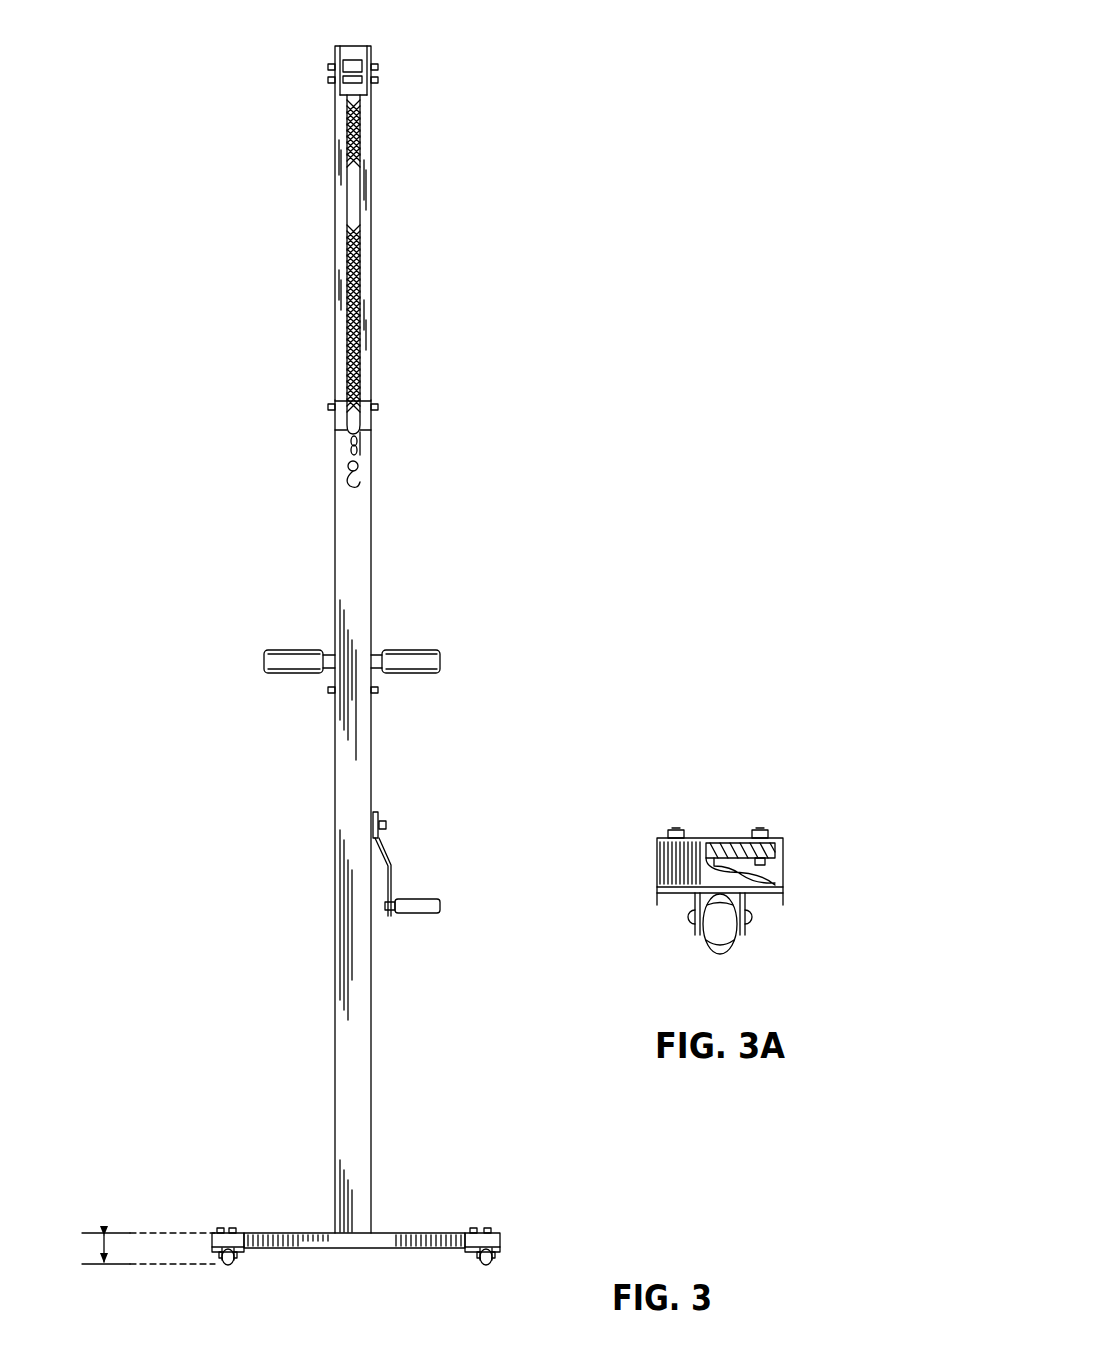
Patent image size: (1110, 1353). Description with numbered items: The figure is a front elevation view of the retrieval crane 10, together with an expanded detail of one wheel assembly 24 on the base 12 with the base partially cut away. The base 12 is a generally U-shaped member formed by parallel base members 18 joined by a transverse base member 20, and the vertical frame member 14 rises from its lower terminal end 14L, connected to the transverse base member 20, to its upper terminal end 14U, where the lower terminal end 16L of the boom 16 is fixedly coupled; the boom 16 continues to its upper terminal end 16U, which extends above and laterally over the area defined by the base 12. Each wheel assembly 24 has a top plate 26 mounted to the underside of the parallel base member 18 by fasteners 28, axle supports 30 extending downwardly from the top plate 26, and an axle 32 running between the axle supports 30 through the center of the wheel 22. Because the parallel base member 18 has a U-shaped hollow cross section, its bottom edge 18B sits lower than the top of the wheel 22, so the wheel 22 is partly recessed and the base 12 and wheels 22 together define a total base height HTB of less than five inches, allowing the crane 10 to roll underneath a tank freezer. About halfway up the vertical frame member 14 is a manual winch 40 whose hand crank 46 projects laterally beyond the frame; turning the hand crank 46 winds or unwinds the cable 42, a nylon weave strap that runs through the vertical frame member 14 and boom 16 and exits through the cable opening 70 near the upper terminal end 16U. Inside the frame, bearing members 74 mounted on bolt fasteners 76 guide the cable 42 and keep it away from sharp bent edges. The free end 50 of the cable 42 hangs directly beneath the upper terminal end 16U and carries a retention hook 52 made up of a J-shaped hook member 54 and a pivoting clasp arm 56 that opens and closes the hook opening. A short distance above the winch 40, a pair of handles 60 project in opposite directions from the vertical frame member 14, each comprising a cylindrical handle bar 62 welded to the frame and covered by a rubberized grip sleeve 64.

In FIG. 3, the retrieval crane 10 is at (541, 60).
In FIG. 3, the base 12 is at (385, 1239).
In FIG. 3, the vertical frame member 14 is at (373, 583).
In FIG. 3, the upper terminal end 14U is at (373, 432).
In FIG. 3, the lower terminal end 14L is at (362, 1196).
In FIG. 3, the boom 16 is at (344, 222).
In FIG. 3, the upper terminal end 16U is at (355, 46).
In FIG. 3, the lower terminal end 16L is at (372, 378).
In FIG. 3, the parallel base member 18 is at (386, 1227).
In FIG. 3A, the parallel base member 18 is at (769, 859).
In FIG. 3, the bottom edge 18B is at (503, 1251).
In FIG. 3A, the bottom edge 18B is at (785, 905).
In FIG. 3, the transverse base member 20 is at (372, 1249).
In FIG. 3, the wheel 22 is at (228, 1266).
In FIG. 3A, the wheel 22 is at (720, 955).
In FIG. 3, the wheel assembly 24 is at (362, 1280).
In FIG. 3A, the wheel assembly 24 is at (729, 945).
In FIG. 3A, the top plate 26 is at (725, 848).
In FIG. 3, the fastener 28 is at (232, 1228).
In FIG. 3A, the fastener 28 is at (677, 828).
In FIG. 3, the axle support 30 is at (238, 1258).
In FIG. 3A, the axle support 30 is at (747, 935).
In FIG. 3, the axle 32 is at (220, 1258).
In FIG. 3A, the axle 32 is at (690, 915).
In FIG. 3, the manual winch 40 is at (409, 843).
In FIG. 3, the cable 42 is at (350, 216).
In FIG. 3, the hand crank 46 is at (392, 876).
In FIG. 3, the free end 50 is at (352, 420).
In FIG. 3, the retention hook 52 is at (362, 477).
In FIG. 3, the J-shaped hook member 54 is at (366, 462).
In FIG. 3, the clasp arm 56 is at (350, 466).
In FIG. 3, the handle 60 is at (352, 634).
In FIG. 3, the cylindrical handle bar 62 is at (379, 655).
In FIG. 3, the rubberized grip sleeve 64 is at (264, 662).
In FIG. 3, the cable opening 70 is at (345, 95).
In FIG. 3, the bearing member 74 is at (348, 65).
In FIG. 3, the bolt fastener 76 is at (328, 80).
In FIG. 3, the total base height HTB is at (136, 1248).